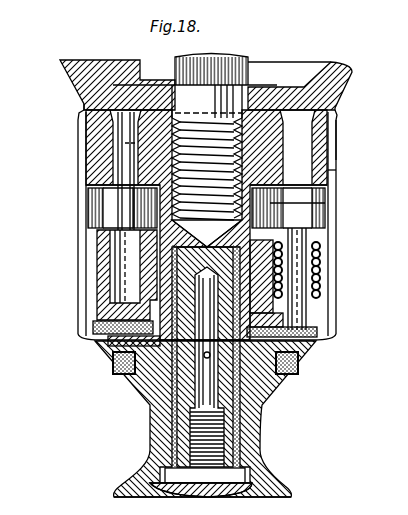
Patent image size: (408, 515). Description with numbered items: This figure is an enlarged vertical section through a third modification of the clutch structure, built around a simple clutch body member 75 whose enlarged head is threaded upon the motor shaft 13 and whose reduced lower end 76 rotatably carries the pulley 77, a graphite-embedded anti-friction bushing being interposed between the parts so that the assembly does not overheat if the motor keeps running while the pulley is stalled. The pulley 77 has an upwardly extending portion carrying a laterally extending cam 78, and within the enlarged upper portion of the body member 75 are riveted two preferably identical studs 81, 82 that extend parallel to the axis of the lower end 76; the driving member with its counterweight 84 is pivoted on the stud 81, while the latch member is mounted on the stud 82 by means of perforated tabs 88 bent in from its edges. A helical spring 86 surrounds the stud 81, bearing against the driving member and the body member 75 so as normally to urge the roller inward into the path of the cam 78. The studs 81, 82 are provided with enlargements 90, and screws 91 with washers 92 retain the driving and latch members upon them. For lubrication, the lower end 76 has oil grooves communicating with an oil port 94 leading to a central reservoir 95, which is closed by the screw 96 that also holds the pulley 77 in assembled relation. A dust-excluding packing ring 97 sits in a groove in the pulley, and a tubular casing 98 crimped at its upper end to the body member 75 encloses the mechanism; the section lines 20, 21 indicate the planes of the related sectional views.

The motor shaft 13 is at (252, 66).
The dimension arrow 20 is at (95, 325).
The dimension arrow 21 is at (120, 268).
The clutch body member 75 is at (337, 168).
The reduced lower end 76 is at (162, 418).
The pulley 77 is at (264, 466).
The cam 78 is at (331, 294).
The stud 81 is at (334, 158).
The stud 82 is at (125, 168).
The counterweight 84 is at (336, 182).
The helical spring 86 is at (321, 251).
The tabs 88 is at (104, 227).
The enlargements 90 is at (120, 205).
The screws 91 is at (300, 354).
The washers 92 is at (110, 341).
The oil port 94 is at (178, 372).
The central reservoir 95 is at (190, 385).
The screw 96 is at (180, 488).
The dust-excluding packing ring 97 is at (124, 378).
The tubular casing 98 is at (274, 203).